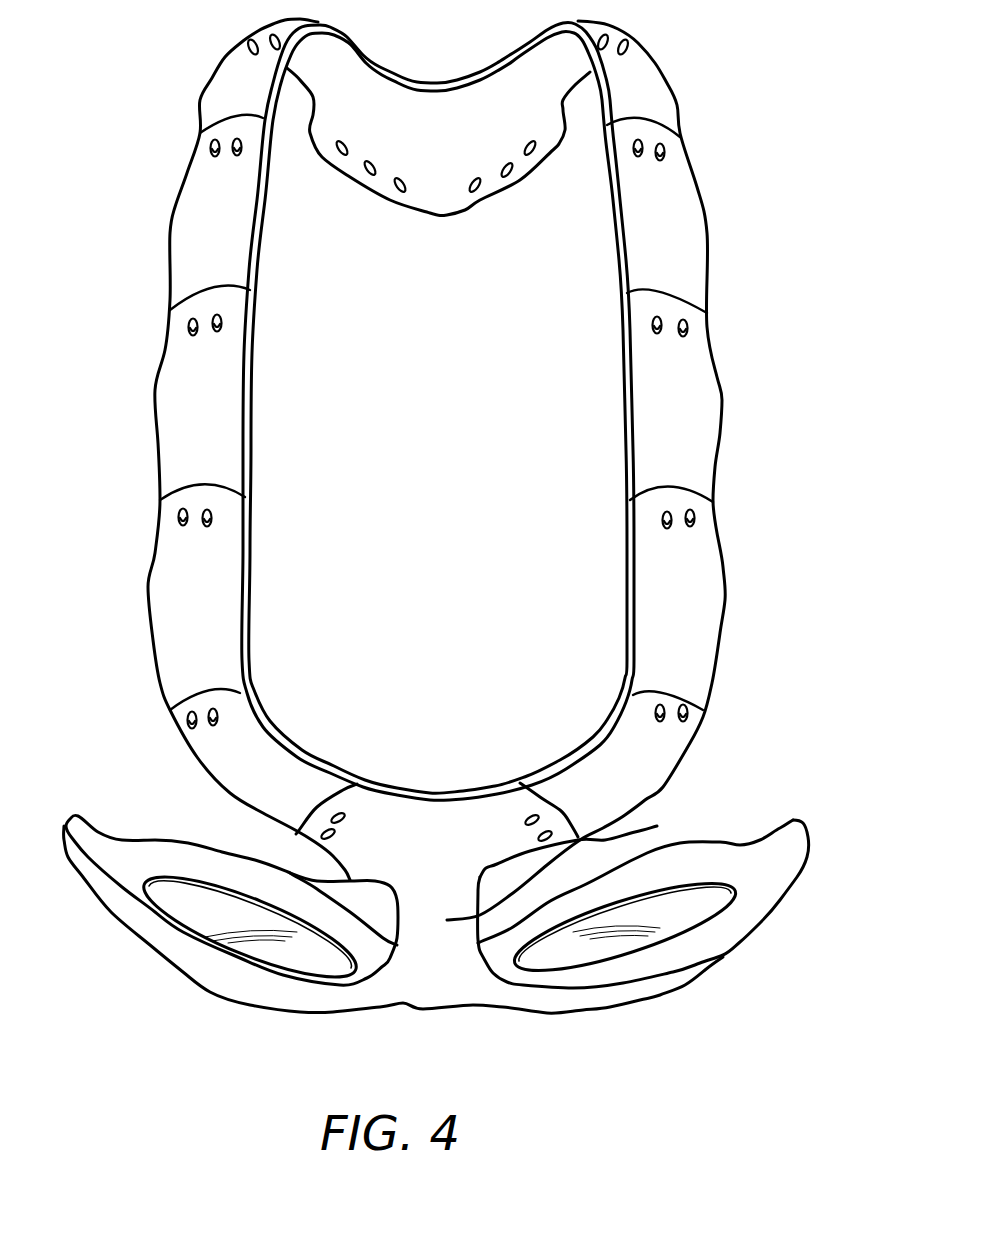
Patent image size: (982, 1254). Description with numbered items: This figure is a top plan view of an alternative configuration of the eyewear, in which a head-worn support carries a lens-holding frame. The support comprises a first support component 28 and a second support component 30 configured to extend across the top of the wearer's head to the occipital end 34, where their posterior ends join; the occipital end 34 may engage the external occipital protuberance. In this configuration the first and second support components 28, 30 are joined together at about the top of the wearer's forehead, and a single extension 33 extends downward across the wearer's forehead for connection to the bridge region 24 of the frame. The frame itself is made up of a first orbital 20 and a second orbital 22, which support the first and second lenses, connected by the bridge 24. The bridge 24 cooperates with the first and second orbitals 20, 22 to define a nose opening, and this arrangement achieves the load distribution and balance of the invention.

The first orbital 20 is at (207, 993).
The second orbital 22 is at (677, 987).
The bridge 24 is at (463, 997).
The first support component 28 is at (227, 270).
The second support component 30 is at (682, 250).
The extension 33 is at (657, 826).
The occipital end 34 is at (450, 183).